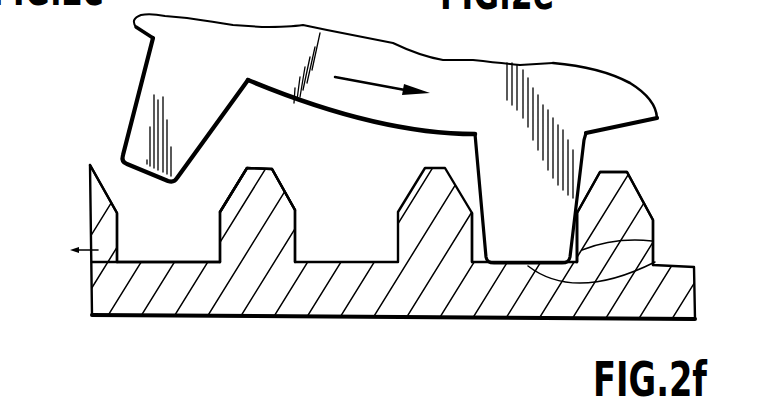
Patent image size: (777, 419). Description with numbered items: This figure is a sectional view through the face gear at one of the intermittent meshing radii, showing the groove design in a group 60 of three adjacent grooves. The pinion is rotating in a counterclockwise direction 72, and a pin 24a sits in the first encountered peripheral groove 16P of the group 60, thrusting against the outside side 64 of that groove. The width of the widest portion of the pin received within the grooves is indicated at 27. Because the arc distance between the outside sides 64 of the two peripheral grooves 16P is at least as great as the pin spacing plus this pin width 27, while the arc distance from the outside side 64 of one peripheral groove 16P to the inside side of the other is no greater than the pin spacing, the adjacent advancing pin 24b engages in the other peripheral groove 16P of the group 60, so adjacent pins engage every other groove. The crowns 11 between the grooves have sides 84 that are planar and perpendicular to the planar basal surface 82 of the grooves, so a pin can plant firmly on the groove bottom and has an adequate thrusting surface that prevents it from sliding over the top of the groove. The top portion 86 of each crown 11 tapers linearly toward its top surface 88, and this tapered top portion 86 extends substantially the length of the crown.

The pin 24a is at (533, 158).
The adjacent advancing pin 24b is at (207, 140).
The counterclockwise direction 72 is at (377, 80).
The peripheral groove 16P is at (655, 258).
The outside side 64 is at (653, 223).
The sides of the crowns 84 is at (118, 214).
The basal surface 82 is at (149, 248).
The top surface 88 is at (260, 162).
The top portion 86 is at (293, 198).
The crown 11 is at (257, 237).
The widest portion of the pin 27 is at (566, 213).
The group of three adjacent grooves 60 is at (567, 338).